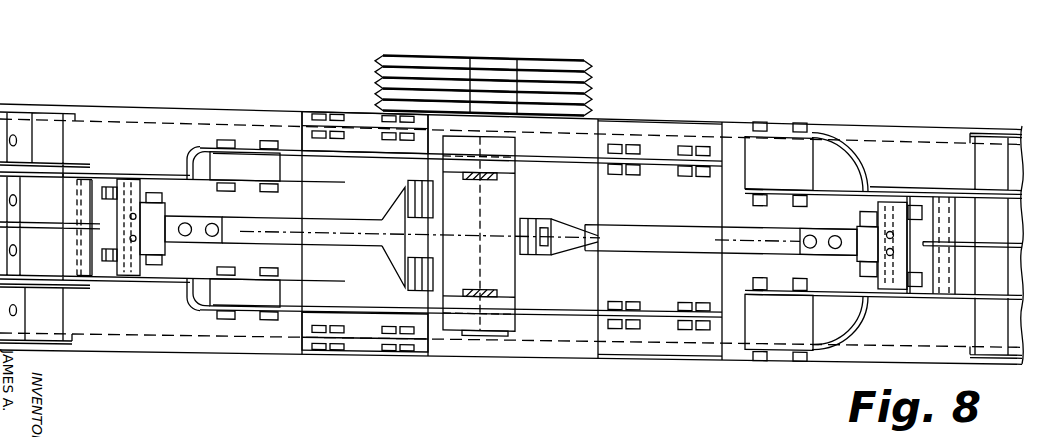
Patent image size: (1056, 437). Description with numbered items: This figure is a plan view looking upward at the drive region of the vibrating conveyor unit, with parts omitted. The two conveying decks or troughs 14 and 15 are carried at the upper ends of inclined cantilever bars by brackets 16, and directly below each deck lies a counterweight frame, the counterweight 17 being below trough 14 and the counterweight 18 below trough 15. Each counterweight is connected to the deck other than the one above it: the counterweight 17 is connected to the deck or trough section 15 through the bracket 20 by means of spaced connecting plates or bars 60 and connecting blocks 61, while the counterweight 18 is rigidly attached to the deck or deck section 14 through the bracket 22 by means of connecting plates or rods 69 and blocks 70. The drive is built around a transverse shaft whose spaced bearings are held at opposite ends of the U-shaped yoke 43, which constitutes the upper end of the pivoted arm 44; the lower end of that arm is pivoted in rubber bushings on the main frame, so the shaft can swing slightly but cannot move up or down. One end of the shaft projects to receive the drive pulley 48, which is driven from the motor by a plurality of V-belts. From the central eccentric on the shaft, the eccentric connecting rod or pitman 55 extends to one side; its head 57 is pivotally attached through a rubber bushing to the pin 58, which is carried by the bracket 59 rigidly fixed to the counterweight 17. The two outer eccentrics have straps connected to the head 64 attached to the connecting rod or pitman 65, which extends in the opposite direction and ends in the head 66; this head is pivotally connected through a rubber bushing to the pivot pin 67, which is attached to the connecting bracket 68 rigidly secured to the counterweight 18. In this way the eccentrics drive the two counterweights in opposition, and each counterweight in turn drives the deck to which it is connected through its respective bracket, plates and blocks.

The deck or trough 14 is at (878, 130).
The deck or trough 15 is at (216, 110).
The bracket 16 is at (50, 143).
The counterweight 17 is at (891, 193).
The counterweight 18 is at (99, 178).
The bracket 20 is at (738, 221).
The bracket 22 is at (365, 234).
The U-shaped yoke 43 is at (479, 236).
The pivoted arm 44 is at (483, 288).
The drive pulley 48 is at (563, 59).
The eccentric connecting rod or pitman 55 is at (689, 240).
The head 57 is at (866, 252).
The pin 58 is at (872, 275).
The bracket 59 is at (908, 238).
The connecting plates or bars 60 is at (736, 128).
The connecting blocks 61 is at (779, 242).
The head 64 is at (398, 243).
The connecting rod or pitman 65 is at (320, 228).
The head 66 is at (155, 225).
The pivot pin 67 is at (149, 262).
The connecting bracket 68 is at (137, 192).
The connecting plates or rods 69 is at (572, 160).
The blocks 70 is at (246, 165).